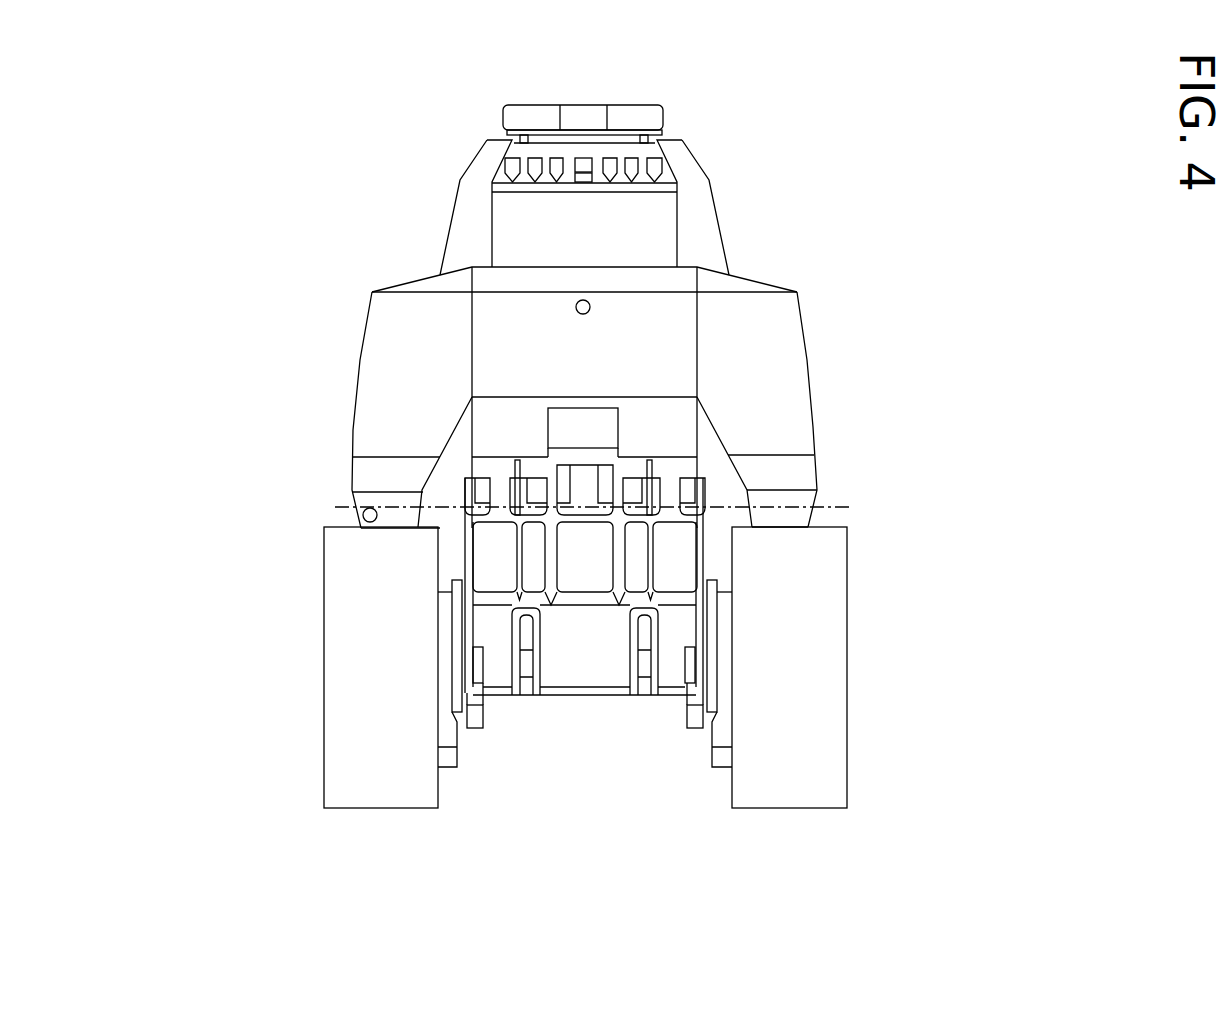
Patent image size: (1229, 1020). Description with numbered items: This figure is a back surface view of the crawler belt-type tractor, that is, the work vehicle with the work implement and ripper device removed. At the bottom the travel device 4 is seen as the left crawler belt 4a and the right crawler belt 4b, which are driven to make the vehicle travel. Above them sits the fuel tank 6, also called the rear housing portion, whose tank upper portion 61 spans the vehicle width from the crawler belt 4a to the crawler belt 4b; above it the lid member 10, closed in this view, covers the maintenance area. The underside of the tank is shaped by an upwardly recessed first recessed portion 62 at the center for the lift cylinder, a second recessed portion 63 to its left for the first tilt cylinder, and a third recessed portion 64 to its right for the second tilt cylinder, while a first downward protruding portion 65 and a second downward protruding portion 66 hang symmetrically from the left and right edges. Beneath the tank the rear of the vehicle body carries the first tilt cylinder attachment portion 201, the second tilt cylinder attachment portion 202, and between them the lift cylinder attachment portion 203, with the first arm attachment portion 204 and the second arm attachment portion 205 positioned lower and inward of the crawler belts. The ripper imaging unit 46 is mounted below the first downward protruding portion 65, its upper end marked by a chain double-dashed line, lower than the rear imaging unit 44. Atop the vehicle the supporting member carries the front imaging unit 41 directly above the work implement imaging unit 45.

The travel device 4 is at (861, 577).
The crawler belt 4a is at (387, 742).
The crawler belt 4b is at (783, 742).
The fuel tank 6 is at (815, 310).
The lid member 10 is at (583, 280).
The front imaging unit 41 is at (575, 162).
The rear imaging unit 44 is at (577, 303).
The work implement imaging unit 45 is at (584, 183).
The ripper imaging unit 46 is at (350, 513).
The tank upper portion 61 is at (585, 352).
The first recessed portion 62 is at (590, 430).
The second recessed portion 63 is at (518, 418).
The third recessed portion 64 is at (650, 412).
The first downward protruding portion 65 is at (385, 473).
The second downward protruding portion 66 is at (787, 477).
The first tilt cylinder attachment portion 201 is at (475, 493).
The second tilt cylinder attachment portion 202 is at (605, 490).
The lift cylinder attachment portion 203 is at (705, 612).
The first arm attachment portion 204 is at (478, 663).
The second arm attachment portion 205 is at (693, 662).